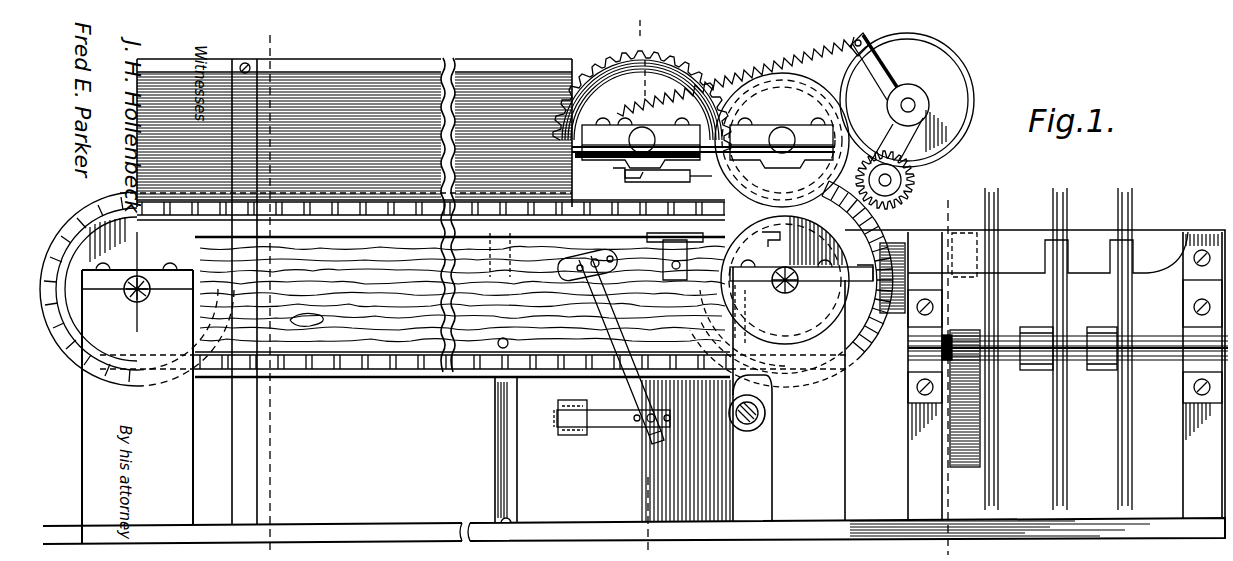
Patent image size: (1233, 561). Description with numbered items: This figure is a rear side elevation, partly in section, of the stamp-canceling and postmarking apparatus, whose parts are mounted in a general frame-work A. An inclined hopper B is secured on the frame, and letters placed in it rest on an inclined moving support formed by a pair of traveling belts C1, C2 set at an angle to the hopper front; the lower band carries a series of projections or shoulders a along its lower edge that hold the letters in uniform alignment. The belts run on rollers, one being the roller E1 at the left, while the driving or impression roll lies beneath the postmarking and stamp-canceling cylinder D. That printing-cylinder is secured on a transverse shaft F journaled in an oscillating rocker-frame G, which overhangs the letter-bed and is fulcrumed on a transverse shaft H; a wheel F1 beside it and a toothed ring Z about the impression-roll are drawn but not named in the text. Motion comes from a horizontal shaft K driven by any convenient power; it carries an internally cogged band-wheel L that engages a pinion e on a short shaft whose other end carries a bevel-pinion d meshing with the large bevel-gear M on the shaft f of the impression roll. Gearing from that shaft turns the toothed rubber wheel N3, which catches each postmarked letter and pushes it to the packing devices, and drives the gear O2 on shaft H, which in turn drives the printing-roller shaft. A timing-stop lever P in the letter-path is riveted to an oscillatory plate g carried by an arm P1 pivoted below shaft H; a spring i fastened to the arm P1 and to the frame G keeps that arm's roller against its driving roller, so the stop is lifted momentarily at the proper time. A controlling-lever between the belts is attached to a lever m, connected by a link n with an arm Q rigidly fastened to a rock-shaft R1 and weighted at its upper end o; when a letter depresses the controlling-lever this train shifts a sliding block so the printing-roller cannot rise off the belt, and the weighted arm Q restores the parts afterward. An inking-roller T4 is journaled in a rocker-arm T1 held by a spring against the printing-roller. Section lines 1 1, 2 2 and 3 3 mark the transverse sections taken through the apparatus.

The frame-work A is at (634, 301).
The inclined hopper B is at (352, 58).
The traveling belt C1 is at (462, 293).
The traveling belt C2 is at (425, 187).
The printing-cylinder D is at (805, 96).
The band roller E1 is at (137, 289).
The transverse shaft F is at (797, 280).
The wheel F1 is at (782, 140).
The rocker-frame G is at (682, 150).
The transverse shaft H is at (694, 109).
The horizontal shaft K is at (1162, 348).
The band-wheel L is at (967, 467).
The bevel-gear M is at (866, 356).
The toothed rubber wheel N3 is at (915, 192).
The gear O2 is at (700, 78).
The timing-stop lever P is at (748, 212).
The arm P1 is at (598, 160).
The arm Q is at (617, 427).
The rock-shaft R1 is at (750, 431).
The rocker-arm T1 is at (898, 98).
The inking-roller T4 is at (960, 92).
The toothed segment Z is at (791, 284).
The projections or shoulders a is at (328, 216).
The bevel-pinion d is at (892, 302).
The pinion e is at (972, 266).
The shaft f is at (789, 294).
The oscillatory plate g is at (661, 180).
The spring i is at (760, 236).
The lever m is at (625, 276).
The link n is at (611, 346).
The weighted end o is at (572, 435).
The section line 1 1 is at (651, 282).
The section line 2 2 is at (280, 42).
The section line 3 3 is at (944, 373).